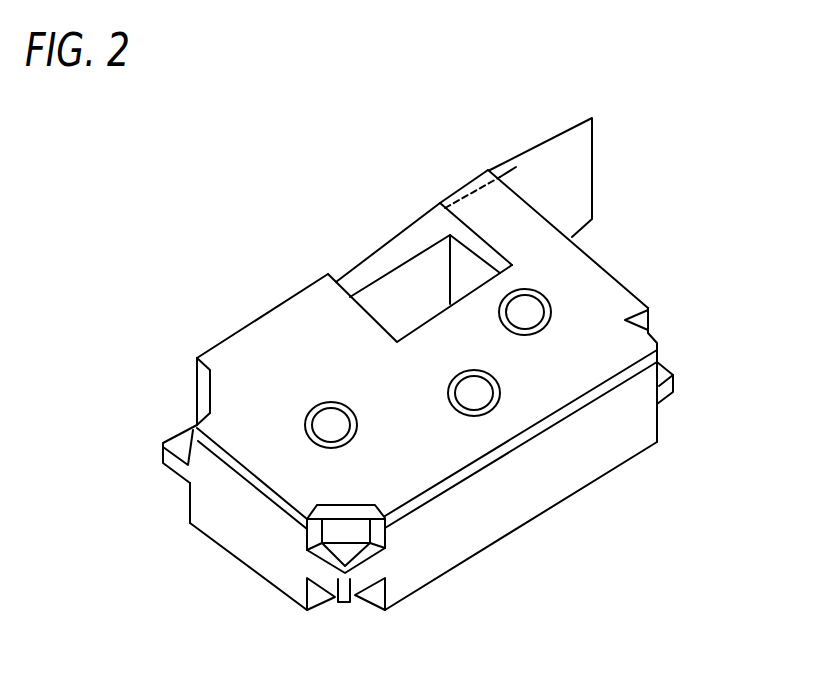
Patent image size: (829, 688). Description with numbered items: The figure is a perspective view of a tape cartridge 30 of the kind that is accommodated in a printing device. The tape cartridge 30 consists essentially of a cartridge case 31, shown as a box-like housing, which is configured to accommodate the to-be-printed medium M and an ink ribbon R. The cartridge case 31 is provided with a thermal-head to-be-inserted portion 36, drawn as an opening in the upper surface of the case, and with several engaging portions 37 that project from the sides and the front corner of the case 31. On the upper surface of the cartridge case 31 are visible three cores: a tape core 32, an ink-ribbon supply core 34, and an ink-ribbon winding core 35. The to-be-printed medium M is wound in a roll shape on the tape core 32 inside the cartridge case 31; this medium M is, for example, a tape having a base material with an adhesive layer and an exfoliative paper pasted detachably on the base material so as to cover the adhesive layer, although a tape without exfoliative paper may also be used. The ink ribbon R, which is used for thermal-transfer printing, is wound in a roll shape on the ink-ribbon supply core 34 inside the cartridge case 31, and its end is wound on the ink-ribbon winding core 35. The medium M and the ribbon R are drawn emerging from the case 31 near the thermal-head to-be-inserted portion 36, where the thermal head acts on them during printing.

The tape cartridge 30 is at (680, 280).
The cartridge case 31 is at (249, 344).
The tape core 32 is at (327, 427).
The ink-ribbon supply core 34 is at (484, 396).
The ink-ribbon winding core 35 is at (537, 294).
The thermal-head to-be-inserted portion 36 is at (392, 302).
The engaging portion 37 is at (190, 425).
The to-be-printed medium M is at (547, 166).
The ink ribbon R is at (422, 268).